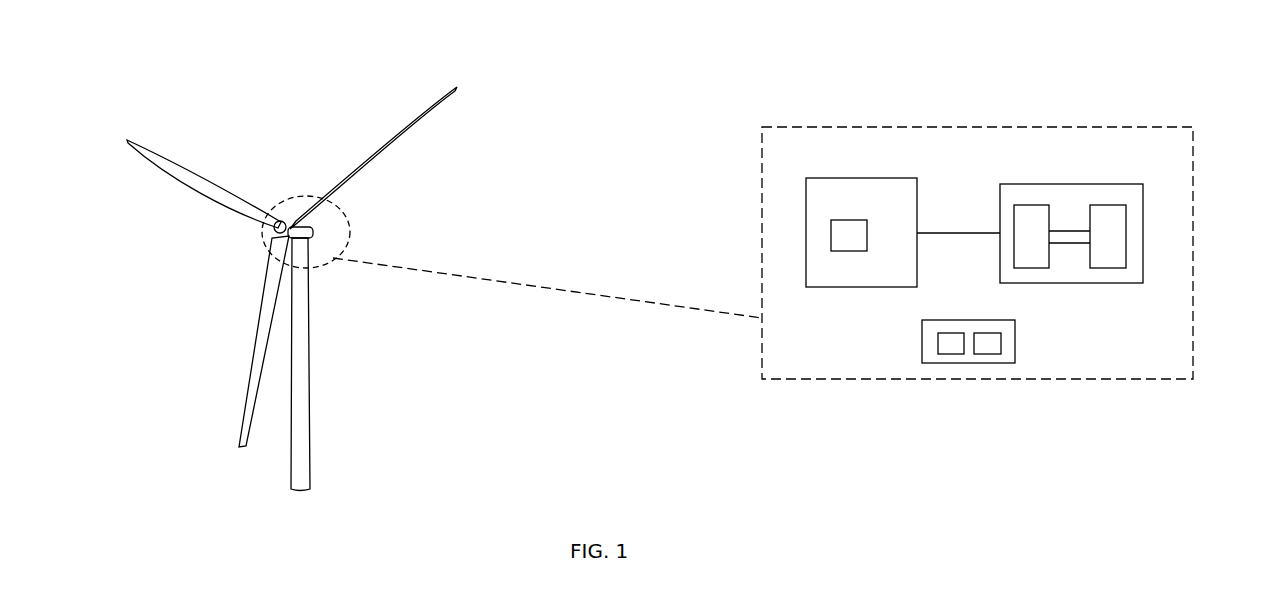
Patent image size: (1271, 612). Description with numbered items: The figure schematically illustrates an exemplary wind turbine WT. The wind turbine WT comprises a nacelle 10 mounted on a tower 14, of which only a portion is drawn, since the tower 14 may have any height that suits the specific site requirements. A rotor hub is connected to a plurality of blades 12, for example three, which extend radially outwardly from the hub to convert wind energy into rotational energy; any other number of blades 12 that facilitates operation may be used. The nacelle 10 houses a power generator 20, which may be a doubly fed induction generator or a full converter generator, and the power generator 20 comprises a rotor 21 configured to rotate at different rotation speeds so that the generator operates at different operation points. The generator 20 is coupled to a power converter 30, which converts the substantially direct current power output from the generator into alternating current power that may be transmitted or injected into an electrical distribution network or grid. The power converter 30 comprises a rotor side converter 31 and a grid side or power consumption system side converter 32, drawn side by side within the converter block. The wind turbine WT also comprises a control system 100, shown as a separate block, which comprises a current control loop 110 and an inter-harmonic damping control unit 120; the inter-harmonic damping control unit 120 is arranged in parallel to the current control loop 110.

The wind turbine WT is at (294, 104).
The nacelle 10 is at (320, 232).
The blades 12 is at (155, 154).
The tower 14 is at (300, 357).
The power generator 20 is at (852, 182).
The rotor 21 is at (840, 242).
The power converter 30 is at (1082, 182).
The rotor side converter 31 is at (1027, 207).
The grid side converter 32 is at (1113, 247).
The control system 100 is at (920, 348).
The current control loop 110 is at (950, 348).
The inter-harmonic damping control unit 120 is at (997, 347).